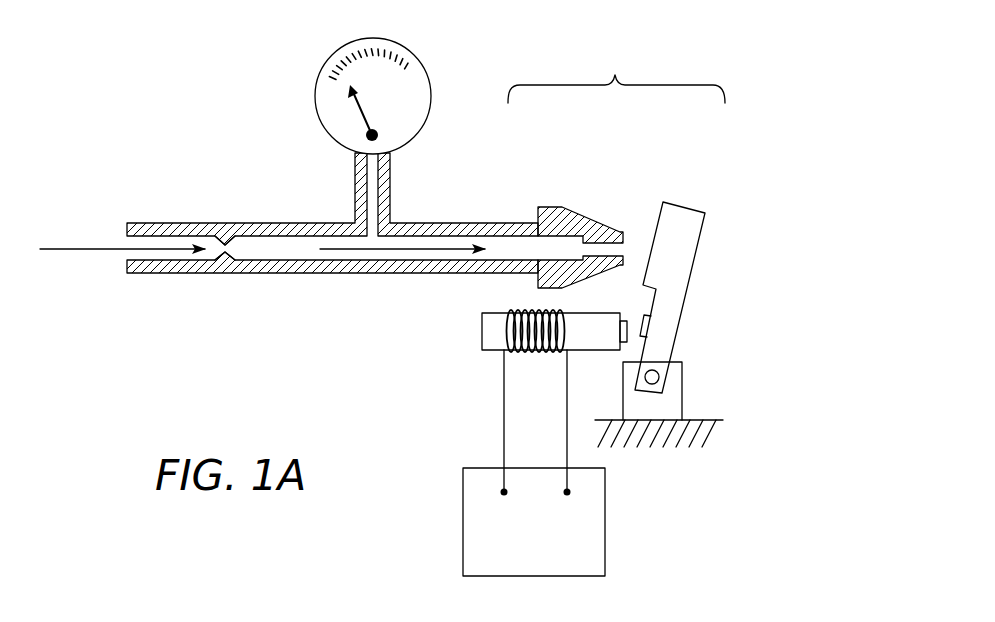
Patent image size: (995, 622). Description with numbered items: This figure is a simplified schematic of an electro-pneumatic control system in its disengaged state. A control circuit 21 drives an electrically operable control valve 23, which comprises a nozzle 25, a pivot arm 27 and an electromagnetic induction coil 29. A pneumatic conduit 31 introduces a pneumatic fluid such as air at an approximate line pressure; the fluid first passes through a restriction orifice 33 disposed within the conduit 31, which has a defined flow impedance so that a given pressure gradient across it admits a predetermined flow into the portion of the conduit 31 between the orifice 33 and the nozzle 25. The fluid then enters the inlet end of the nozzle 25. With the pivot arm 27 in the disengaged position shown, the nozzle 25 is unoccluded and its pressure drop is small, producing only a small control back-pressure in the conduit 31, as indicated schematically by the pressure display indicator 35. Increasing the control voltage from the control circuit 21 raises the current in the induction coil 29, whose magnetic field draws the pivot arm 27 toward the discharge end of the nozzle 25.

The control circuit 21 is at (605, 557).
The control valve 23 is at (616, 74).
The nozzle 25 is at (560, 207).
The pivot arm 27 is at (700, 237).
The electromagnetic induction coil 29 is at (482, 330).
The pneumatic conduit 31 is at (430, 222).
The restriction orifice 33 is at (225, 262).
The pressure display indicator 35 is at (408, 45).